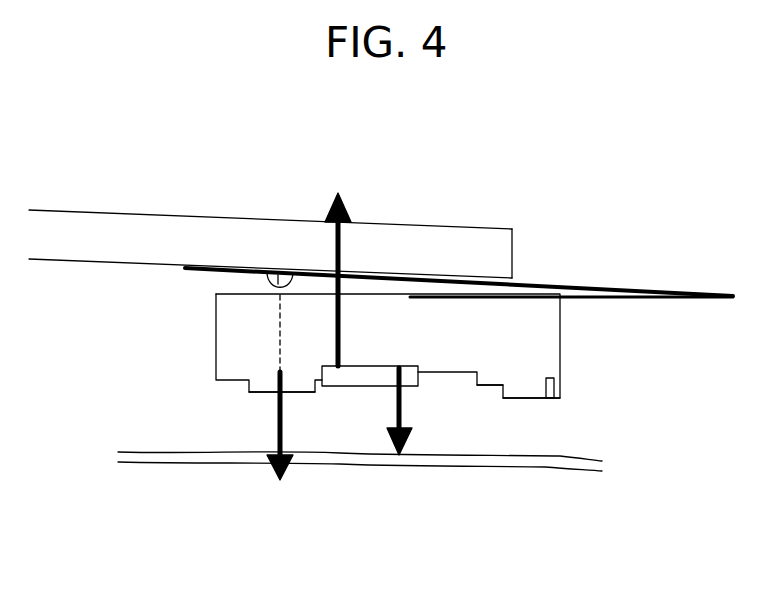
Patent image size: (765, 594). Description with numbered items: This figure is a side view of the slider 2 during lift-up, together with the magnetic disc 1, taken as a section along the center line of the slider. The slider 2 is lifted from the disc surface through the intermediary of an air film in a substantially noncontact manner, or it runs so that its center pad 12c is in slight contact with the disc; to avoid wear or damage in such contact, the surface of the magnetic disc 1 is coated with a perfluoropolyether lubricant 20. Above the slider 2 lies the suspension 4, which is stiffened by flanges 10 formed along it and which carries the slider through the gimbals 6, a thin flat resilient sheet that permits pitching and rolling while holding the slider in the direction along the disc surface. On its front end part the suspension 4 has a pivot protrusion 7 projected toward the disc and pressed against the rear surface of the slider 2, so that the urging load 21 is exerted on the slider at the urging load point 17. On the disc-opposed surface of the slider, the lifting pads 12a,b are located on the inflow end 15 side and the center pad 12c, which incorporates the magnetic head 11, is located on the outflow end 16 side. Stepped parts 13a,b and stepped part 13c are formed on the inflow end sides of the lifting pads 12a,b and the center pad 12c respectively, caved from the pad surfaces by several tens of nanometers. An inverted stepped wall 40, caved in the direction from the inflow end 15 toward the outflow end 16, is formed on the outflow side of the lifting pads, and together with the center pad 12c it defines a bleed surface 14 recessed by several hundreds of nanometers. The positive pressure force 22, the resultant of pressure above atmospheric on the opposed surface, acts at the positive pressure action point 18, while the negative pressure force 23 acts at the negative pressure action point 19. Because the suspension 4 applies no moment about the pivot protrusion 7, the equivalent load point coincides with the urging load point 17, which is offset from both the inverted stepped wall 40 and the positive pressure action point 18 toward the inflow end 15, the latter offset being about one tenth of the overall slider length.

The magnetic disc 1 is at (152, 478).
The slider 2 is at (372, 348).
The suspension 4 is at (122, 264).
The gimbals 6 is at (565, 284).
The pivot protrusion 7 is at (278, 270).
The flanges 10 is at (414, 248).
The magnetic head 11 is at (556, 383).
The lifting pads 12a,b is at (263, 392).
The center pad 12c is at (528, 398).
The stepped parts 13a,b is at (228, 380).
The stepped part 13c is at (479, 385).
The bleed surface 14 is at (445, 372).
The inflow end 15 is at (216, 380).
The outflow end 16 is at (562, 399).
The urging load point 17 is at (276, 368).
The positive pressure action point 18 is at (340, 363).
The negative pressure action point 19 is at (402, 366).
The perfluoropolyether lubricant 20 is at (148, 453).
The urging load 21 is at (290, 482).
The positive pressure force 22 is at (343, 202).
The negative pressure force 23 is at (399, 462).
The inverted stepped wall 40 is at (323, 380).